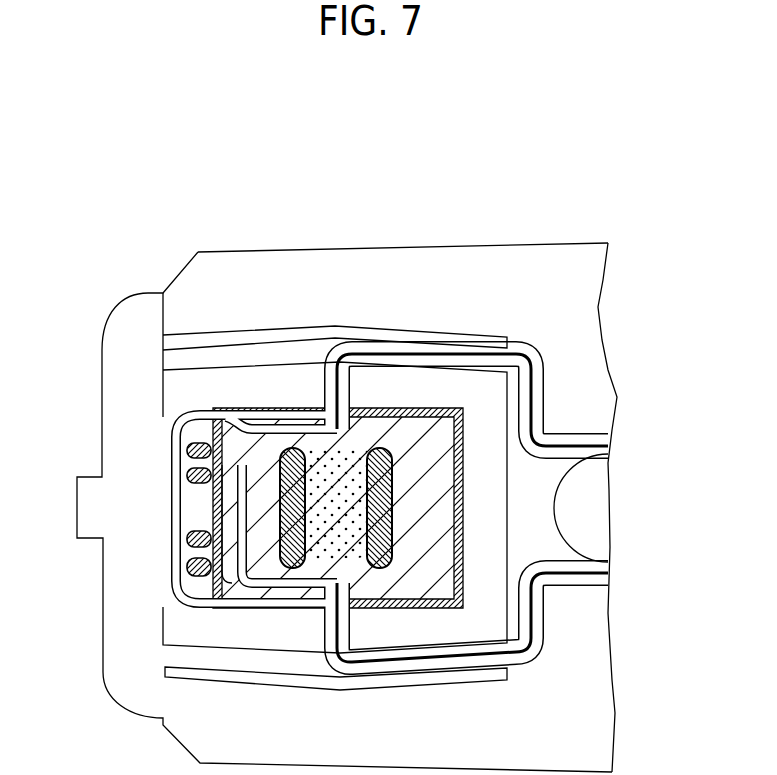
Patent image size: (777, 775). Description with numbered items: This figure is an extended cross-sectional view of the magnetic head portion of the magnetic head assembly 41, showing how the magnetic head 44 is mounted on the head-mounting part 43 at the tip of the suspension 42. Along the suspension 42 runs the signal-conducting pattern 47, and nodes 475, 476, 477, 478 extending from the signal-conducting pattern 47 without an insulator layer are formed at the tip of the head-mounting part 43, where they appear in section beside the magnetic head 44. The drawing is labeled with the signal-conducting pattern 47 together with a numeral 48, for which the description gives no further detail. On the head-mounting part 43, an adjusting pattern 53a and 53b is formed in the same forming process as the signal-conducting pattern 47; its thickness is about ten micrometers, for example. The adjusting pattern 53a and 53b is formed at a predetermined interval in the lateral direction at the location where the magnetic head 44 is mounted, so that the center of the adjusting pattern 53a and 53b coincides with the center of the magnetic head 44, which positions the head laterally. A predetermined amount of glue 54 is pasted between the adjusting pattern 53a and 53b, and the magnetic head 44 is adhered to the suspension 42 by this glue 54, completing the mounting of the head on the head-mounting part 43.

The magnetic head assembly 41 is at (495, 197).
The suspension 42 is at (360, 245).
The head-mounting part 43 is at (212, 619).
The magnetic head 44 is at (437, 425).
The signal-conducting pattern 47 is at (540, 382).
The inner shield plate 48 is at (470, 496).
The node 475 is at (200, 447).
The node 476 is at (200, 478).
The node 477 is at (200, 547).
The node 478 is at (200, 577).
The adjusting pattern 53a is at (380, 573).
The adjusting pattern 53b is at (277, 443).
The glue 54 is at (352, 563).